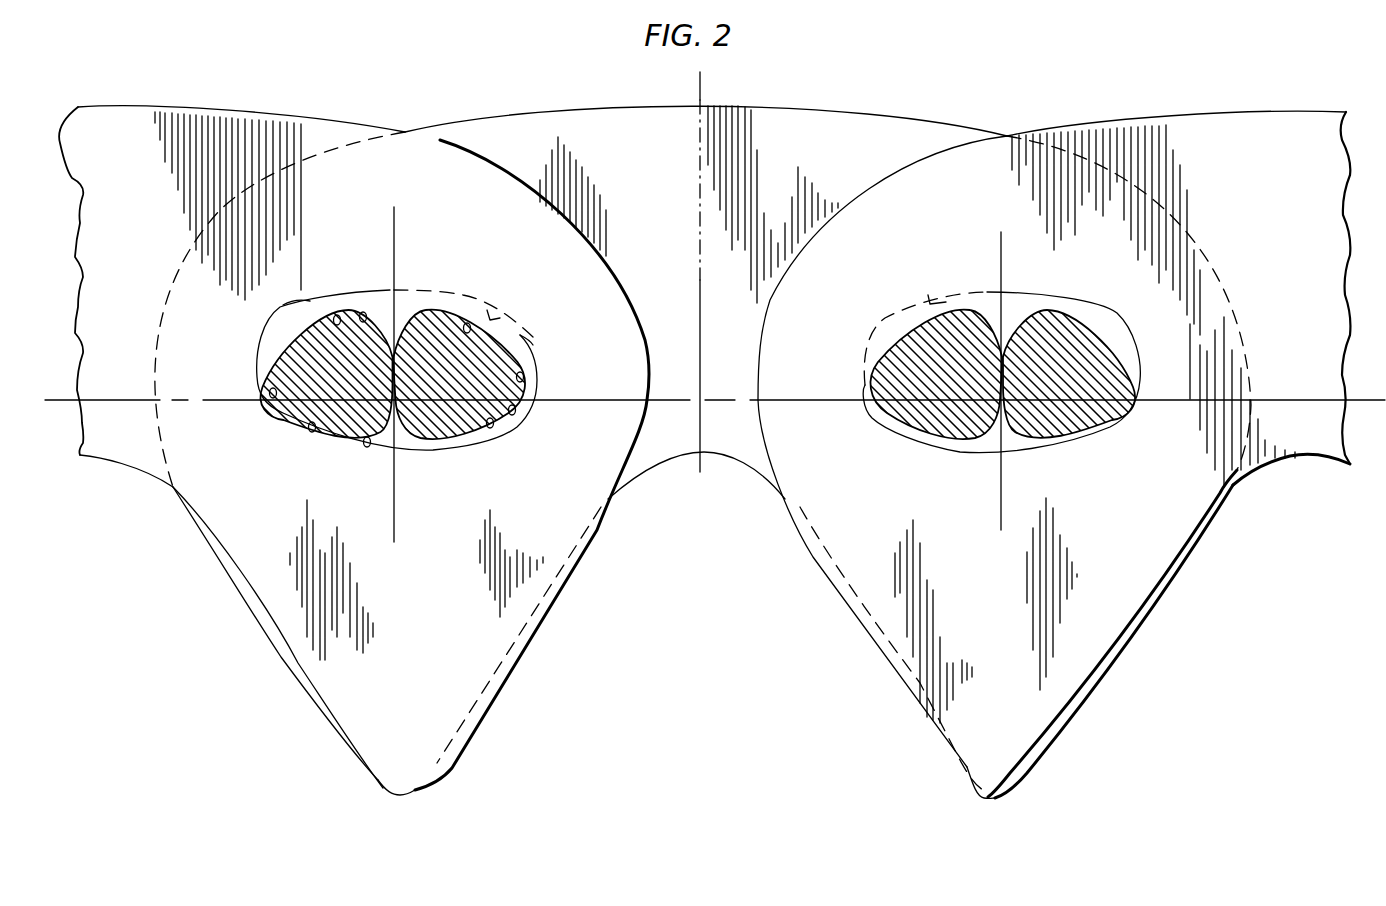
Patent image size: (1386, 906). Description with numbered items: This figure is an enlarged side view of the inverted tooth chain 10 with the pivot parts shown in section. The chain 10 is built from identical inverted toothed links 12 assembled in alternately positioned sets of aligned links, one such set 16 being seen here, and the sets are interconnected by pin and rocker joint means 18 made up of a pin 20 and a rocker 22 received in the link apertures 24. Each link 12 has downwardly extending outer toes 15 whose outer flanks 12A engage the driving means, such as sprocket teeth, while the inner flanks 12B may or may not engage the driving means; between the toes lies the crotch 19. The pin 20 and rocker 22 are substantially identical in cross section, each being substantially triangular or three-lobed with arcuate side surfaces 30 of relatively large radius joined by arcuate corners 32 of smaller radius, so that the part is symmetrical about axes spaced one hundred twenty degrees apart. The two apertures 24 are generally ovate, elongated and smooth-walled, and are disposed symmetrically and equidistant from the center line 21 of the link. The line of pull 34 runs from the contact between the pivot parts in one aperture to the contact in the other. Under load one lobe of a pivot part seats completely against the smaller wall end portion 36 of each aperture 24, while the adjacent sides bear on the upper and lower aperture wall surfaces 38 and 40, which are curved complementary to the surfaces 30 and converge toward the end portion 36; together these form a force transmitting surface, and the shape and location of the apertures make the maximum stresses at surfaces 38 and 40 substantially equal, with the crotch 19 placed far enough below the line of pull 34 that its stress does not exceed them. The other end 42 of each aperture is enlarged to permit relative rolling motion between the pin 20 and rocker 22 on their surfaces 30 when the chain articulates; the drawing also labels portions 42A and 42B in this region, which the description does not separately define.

The inverted tooth chain 10 is at (970, 103).
The inverted toothed link 12 is at (703, 468).
The flank 12A is at (280, 656).
The inner flank 12B is at (317, 680).
The outer toe 15 is at (423, 753).
The set of aligned links 16 is at (494, 700).
The pin and rocker joint means 18 is at (699, 374).
The crotch 19 is at (755, 478).
The pin 20 is at (458, 430).
The center line 21 is at (705, 90).
The rocker 22 is at (343, 430).
The link aperture 24 is at (513, 313).
The arcuate side surface 30 is at (340, 312).
The arcuate corner 32 is at (386, 312).
The line of pull 34 is at (700, 404).
The smaller wall end portion 36 is at (537, 373).
The upper aperture wall surface 38 is at (533, 340).
The lower aperture wall surface 40 is at (510, 426).
The enlarged end portion 42 is at (257, 345).
The holder lower edge 42A is at (272, 420).
The holder upper edge 42B is at (283, 302).